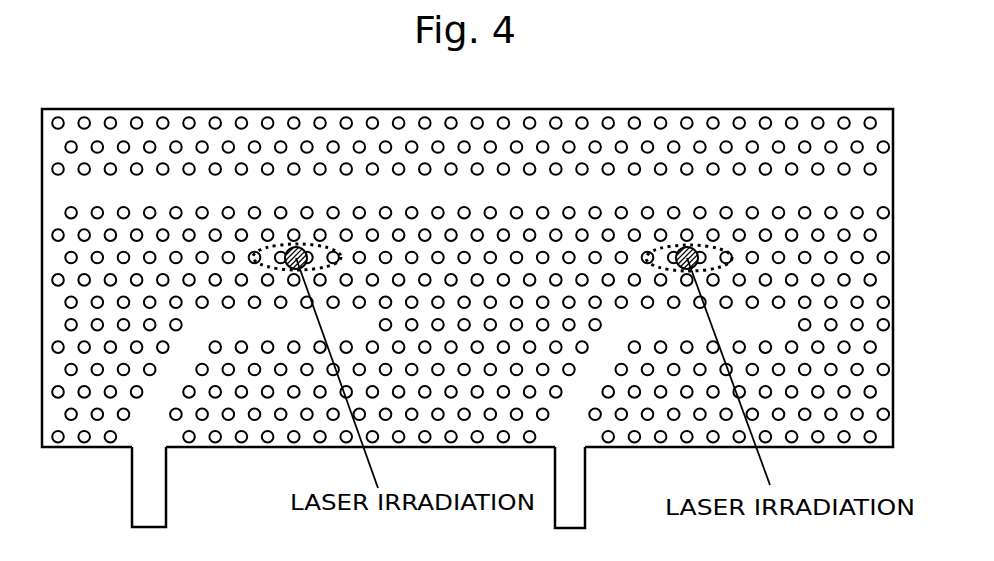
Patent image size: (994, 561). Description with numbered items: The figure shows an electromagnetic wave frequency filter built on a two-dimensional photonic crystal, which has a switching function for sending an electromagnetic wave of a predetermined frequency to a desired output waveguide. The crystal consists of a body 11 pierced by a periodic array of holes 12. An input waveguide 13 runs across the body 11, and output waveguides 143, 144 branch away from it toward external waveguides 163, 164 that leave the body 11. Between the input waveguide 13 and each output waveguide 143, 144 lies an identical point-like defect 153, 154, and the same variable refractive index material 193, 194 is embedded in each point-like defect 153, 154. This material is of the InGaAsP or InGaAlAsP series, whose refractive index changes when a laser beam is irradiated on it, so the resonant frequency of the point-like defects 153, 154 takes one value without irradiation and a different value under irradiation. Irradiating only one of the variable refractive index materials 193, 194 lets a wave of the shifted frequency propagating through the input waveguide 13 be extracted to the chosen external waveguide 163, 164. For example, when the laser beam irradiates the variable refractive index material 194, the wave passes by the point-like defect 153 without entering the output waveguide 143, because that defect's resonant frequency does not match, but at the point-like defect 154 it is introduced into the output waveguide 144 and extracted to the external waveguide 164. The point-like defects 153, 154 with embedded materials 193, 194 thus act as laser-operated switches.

The body 11 is at (175, 127).
The holes 12 is at (214, 125).
The input waveguide 13 is at (538, 190).
The output waveguide 143 is at (223, 330).
The output waveguide 144 is at (618, 328).
The point-like defect 153 is at (340, 250).
The point-like defect 154 is at (730, 255).
The external waveguide 163 is at (143, 463).
The external waveguide 164 is at (568, 463).
The variable refractive index material 193 is at (296, 258).
The variable refractive index material 194 is at (687, 258).